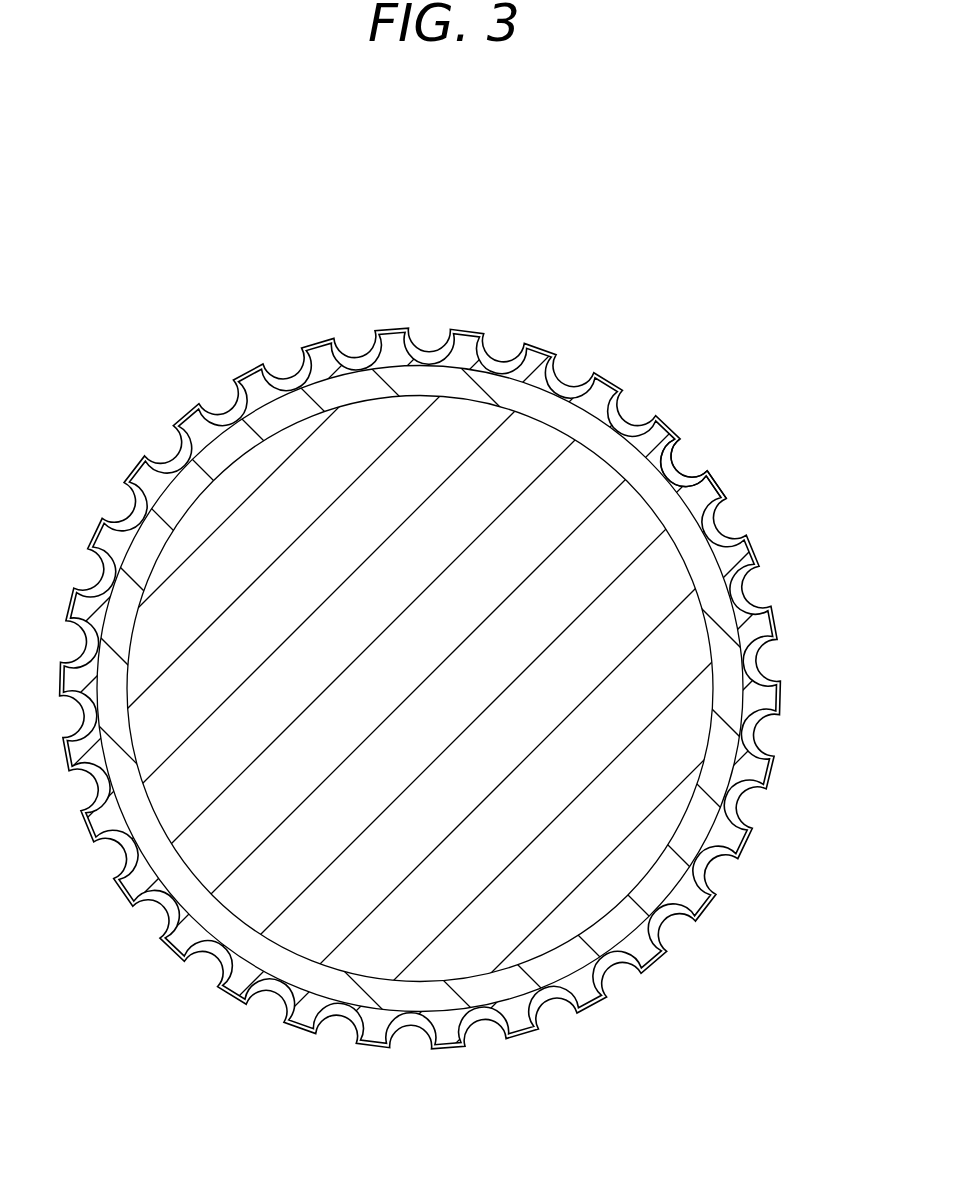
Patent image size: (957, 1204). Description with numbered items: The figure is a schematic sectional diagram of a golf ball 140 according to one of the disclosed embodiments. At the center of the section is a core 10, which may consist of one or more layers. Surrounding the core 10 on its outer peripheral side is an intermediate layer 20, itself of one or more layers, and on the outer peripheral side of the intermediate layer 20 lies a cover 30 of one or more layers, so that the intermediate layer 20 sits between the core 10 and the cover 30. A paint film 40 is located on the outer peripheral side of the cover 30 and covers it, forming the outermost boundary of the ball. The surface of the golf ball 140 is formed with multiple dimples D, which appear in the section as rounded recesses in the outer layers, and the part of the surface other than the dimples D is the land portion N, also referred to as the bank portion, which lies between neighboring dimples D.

The golf ball 140 is at (148, 362).
The core 10 is at (662, 667).
The intermediate layer 20 is at (720, 766).
The cover 30 is at (693, 897).
The paint film 40 is at (595, 1002).
The dimples D is at (699, 456).
The land portion N is at (726, 480).